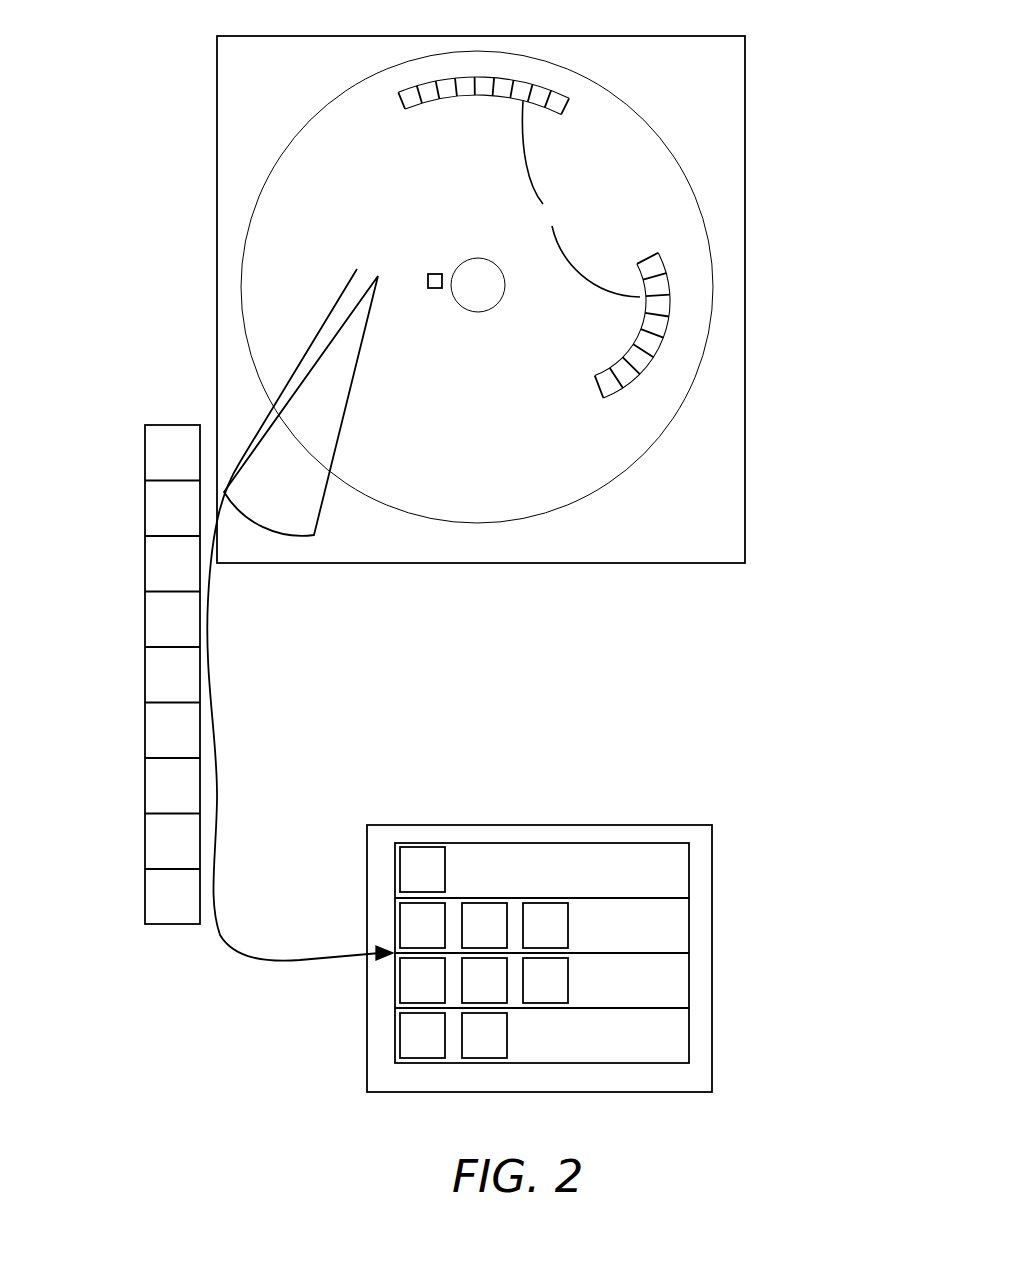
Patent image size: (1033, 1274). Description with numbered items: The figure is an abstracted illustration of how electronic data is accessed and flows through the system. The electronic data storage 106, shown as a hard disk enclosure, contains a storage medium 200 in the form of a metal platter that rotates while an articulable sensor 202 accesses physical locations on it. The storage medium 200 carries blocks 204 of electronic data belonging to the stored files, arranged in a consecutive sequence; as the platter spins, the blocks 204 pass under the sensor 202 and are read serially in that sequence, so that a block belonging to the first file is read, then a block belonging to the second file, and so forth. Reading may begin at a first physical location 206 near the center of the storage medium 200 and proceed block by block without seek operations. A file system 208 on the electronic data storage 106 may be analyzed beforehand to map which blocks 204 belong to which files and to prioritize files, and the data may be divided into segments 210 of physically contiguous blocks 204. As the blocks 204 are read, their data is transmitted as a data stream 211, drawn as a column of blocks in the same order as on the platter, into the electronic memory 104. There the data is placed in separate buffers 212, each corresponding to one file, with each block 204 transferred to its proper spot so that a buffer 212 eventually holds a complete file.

The electronic memory 104 is at (515, 924).
The electronic data storage 106 is at (215, 97).
The storage medium 200 is at (678, 221).
The sensor 202 is at (360, 308).
The blocks 204 is at (470, 80).
The first physical location 206 is at (438, 268).
The file system 208 is at (430, 282).
The segments 210 is at (581, 199).
The data stream 211 is at (143, 440).
The buffers 212 is at (393, 925).